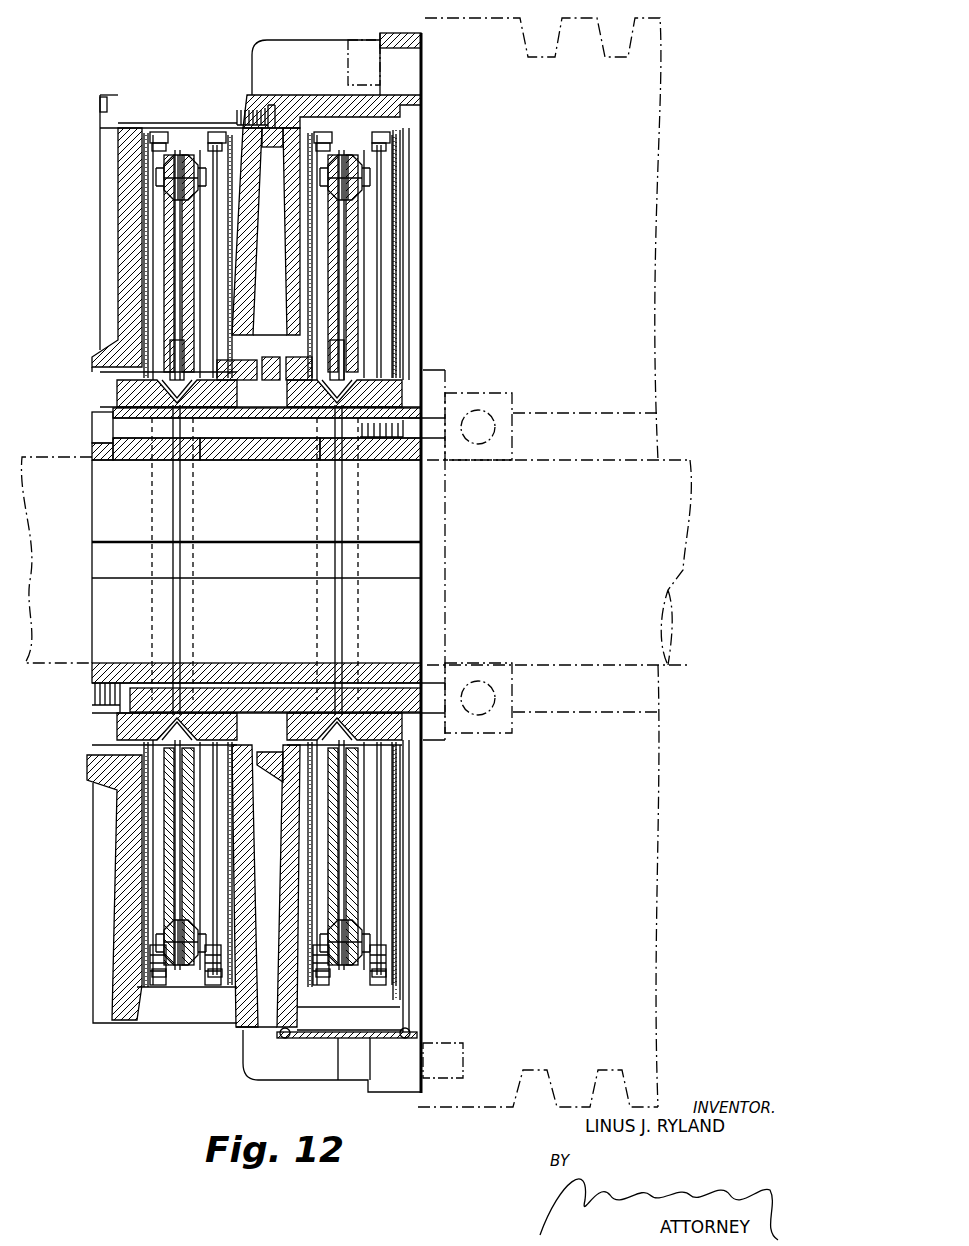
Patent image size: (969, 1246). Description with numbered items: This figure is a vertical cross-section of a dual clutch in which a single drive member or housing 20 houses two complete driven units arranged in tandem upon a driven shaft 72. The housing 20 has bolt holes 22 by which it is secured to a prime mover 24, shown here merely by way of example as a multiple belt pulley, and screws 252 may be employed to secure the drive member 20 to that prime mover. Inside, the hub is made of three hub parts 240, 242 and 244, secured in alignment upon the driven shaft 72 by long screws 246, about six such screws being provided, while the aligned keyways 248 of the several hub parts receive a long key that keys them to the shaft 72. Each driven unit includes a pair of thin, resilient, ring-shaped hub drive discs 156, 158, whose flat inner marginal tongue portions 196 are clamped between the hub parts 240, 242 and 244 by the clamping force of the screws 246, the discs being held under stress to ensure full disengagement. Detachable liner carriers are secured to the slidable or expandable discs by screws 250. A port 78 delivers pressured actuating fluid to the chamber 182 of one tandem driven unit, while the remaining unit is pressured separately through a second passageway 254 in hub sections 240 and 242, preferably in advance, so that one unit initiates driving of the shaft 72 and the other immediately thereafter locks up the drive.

The drive member or housing 20 is at (291, 88).
The bolt holes 22 is at (395, 34).
The prime mover 24 is at (667, 62).
The driven shaft 72 is at (70, 647).
The port 78 is at (97, 697).
The hub drive disc 156 is at (170, 374).
The hub drive disc 158 is at (178, 363).
The chamber 182 is at (125, 737).
The inner marginal tongue portions 196 is at (165, 413).
The hub part 240 is at (114, 461).
The hub part 242 is at (247, 463).
The hub part 244 is at (382, 462).
The long screws 246 is at (120, 432).
The keyways 248 is at (135, 560).
The screws 250 is at (217, 132).
The screws 252 is at (467, 55).
The second passageway 254 is at (253, 667).